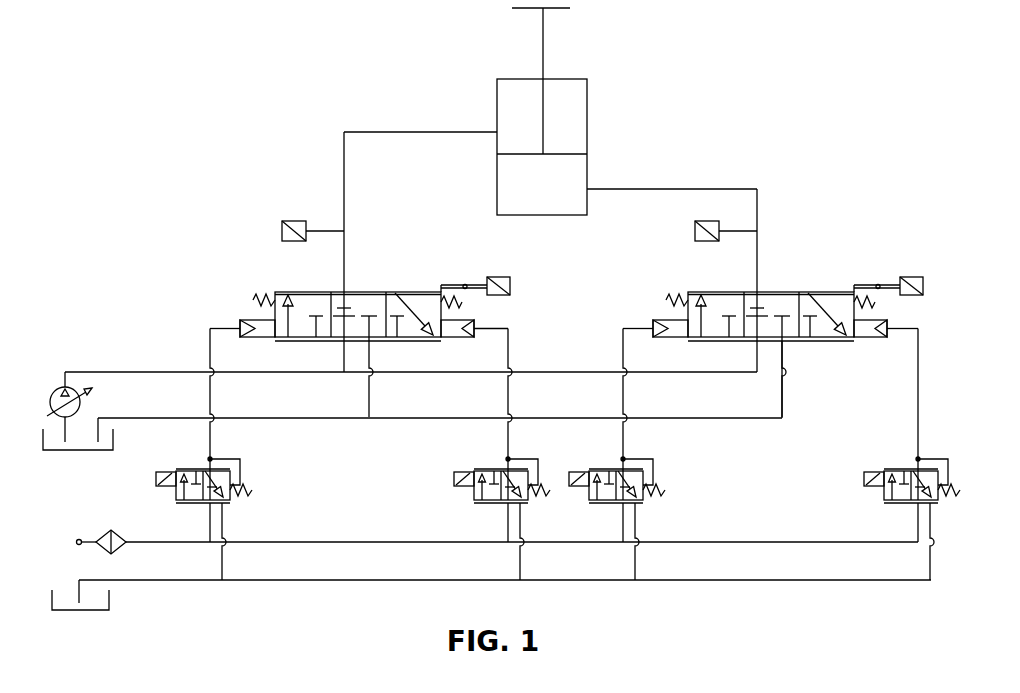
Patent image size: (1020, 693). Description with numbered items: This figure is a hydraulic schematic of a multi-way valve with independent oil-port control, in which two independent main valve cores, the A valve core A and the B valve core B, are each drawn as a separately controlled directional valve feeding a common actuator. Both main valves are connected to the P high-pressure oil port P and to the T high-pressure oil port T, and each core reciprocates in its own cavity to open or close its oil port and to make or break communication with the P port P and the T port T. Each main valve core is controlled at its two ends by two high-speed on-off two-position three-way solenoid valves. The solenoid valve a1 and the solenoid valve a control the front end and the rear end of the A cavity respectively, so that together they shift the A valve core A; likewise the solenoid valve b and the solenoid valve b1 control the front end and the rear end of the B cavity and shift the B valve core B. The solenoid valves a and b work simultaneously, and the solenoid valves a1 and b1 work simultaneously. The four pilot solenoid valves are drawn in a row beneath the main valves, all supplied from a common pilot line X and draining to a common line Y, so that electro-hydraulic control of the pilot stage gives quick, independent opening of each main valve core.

The A valve core A is at (360, 319).
The B valve core B is at (773, 319).
The solenoid valve a1 is at (204, 517).
The solenoid valve a is at (502, 517).
The solenoid valve b is at (617, 517).
The solenoid valve b1 is at (912, 517).
The P high-pressure oil port P is at (400, 399).
The T high-pressure oil port T is at (440, 391).
The pilot pressure supply line with filter X is at (498, 533).
The pilot drain line Y is at (491, 586).